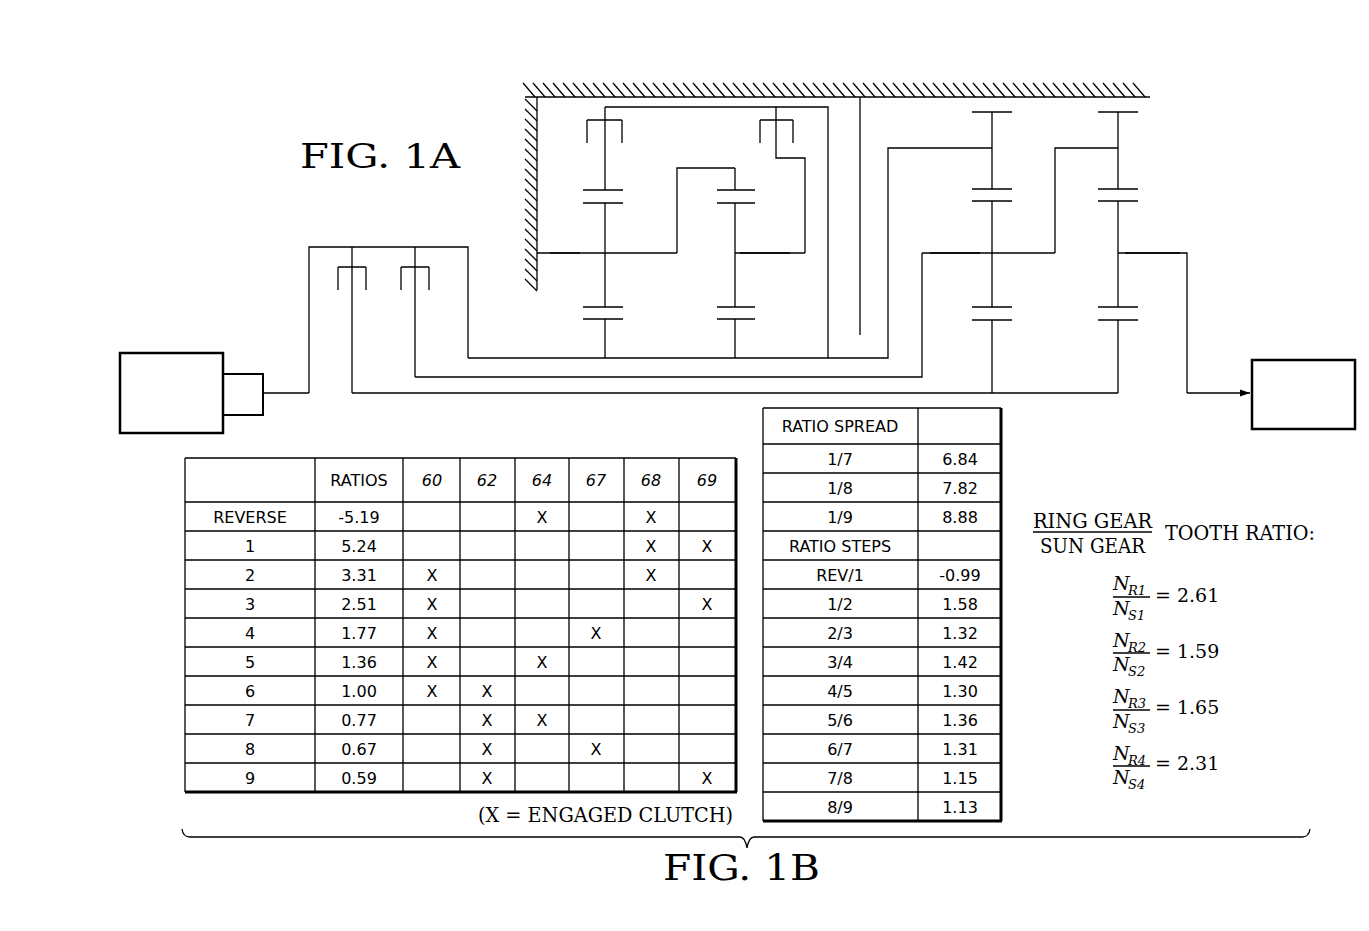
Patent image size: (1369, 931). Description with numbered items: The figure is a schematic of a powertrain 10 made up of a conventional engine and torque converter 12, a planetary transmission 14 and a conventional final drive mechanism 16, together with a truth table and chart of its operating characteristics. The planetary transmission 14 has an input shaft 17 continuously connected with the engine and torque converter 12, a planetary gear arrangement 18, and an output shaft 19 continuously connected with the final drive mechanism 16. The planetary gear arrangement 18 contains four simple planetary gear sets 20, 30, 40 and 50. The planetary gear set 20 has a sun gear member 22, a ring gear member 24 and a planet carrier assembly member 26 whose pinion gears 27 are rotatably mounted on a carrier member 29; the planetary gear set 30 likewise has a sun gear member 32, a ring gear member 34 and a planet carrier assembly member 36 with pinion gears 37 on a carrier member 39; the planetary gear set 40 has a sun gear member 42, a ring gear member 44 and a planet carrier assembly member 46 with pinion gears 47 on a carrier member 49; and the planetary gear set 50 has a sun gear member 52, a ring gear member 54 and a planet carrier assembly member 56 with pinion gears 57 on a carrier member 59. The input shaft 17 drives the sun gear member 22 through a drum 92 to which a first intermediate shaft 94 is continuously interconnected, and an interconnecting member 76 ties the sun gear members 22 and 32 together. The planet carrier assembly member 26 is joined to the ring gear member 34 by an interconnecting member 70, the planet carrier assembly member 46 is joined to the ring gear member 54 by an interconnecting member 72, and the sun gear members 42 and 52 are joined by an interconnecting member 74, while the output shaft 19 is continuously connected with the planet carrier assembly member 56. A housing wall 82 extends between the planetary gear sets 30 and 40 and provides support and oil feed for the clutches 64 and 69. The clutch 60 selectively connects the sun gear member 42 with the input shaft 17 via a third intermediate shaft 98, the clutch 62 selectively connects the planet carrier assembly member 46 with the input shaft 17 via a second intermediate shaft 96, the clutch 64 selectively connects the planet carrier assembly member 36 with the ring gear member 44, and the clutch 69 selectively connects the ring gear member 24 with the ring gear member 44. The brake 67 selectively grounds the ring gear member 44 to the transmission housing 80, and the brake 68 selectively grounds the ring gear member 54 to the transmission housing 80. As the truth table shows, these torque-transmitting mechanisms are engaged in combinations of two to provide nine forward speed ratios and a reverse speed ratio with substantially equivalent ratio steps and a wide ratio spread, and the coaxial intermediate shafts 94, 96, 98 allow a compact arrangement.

The powertrain 10 is at (497, 112).
The engine and torque converter 12 is at (190, 333).
The planetary transmission 14 is at (700, 80).
The final drive mechanism 16 is at (1288, 340).
The input shaft 17 is at (289, 398).
The planetary gear arrangement 18 is at (1032, 82).
The output shaft 19 is at (1205, 398).
The planetary gear set 20 is at (615, 327).
The sun gear member 22 is at (593, 323).
The ring gear member 24 is at (612, 190).
The planet carrier assembly member 26 is at (573, 263).
The pinion gears 27 is at (603, 287).
The carrier member 29 is at (560, 252).
The planetary gear set 30 is at (747, 327).
The sun gear member 32 is at (728, 323).
The ring gear member 34 is at (745, 190).
The planet carrier assembly member 36 is at (758, 265).
The pinion gears 37 is at (737, 240).
The carrier member 39 is at (782, 254).
The planetary gear set 40 is at (1005, 332).
The sun gear member 42 is at (983, 325).
The ring gear member 44 is at (1000, 182).
The planet carrier assembly member 46 is at (952, 270).
The pinion gears 47 is at (993, 234).
The carrier member 49 is at (948, 252).
The planetary gear set 50 is at (1132, 333).
The sun gear member 52 is at (1107, 325).
The ring gear member 54 is at (1125, 182).
The planet carrier assembly member 56 is at (1158, 272).
The pinion gears 57 is at (1120, 234).
The carrier member 59 is at (1172, 253).
The clutch 60 is at (343, 294).
The clutch 62 is at (406, 294).
The clutch 64 is at (765, 148).
The brake 67 is at (1018, 103).
The brake 68 is at (1145, 103).
The clutch 69 is at (590, 148).
The interconnecting member 70 is at (692, 168).
The interconnecting member 72 is at (1090, 148).
The interconnecting member 74 is at (1057, 394).
The interconnecting member 76 is at (726, 360).
The transmission housing 80 is at (948, 85).
The housing wall 82 is at (863, 128).
The drum 92 is at (323, 246).
The first intermediate shaft 94 is at (490, 360).
The second intermediate shaft 96 is at (538, 378).
The third intermediate shaft 98 is at (590, 394).